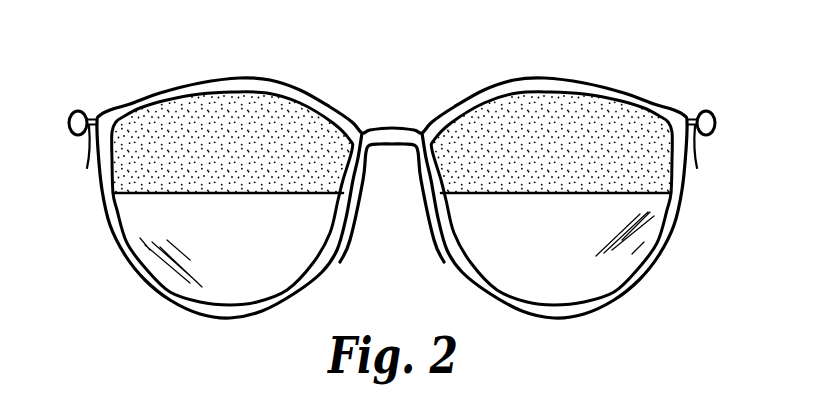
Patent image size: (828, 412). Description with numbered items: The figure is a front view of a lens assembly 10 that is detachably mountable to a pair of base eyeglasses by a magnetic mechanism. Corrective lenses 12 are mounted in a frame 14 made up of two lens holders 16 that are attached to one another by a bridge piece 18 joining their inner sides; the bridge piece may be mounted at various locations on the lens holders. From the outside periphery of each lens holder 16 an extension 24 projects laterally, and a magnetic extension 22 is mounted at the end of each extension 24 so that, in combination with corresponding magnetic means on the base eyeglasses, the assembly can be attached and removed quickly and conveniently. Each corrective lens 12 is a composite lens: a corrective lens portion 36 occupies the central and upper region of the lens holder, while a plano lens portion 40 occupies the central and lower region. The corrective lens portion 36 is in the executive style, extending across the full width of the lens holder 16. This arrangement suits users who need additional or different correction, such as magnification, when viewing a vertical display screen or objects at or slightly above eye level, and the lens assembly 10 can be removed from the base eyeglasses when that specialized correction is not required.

The lens assembly 10 is at (397, 208).
The corrective lenses 12 is at (392, 186).
The frame 14 is at (118, 239).
The lens holders 16 is at (238, 78).
The bridge piece 18 is at (382, 146).
The magnetic extension 22 is at (72, 111).
The extension 24 is at (88, 166).
The corrective lens portion 36 is at (259, 155).
The plano lens portion 40 is at (263, 262).